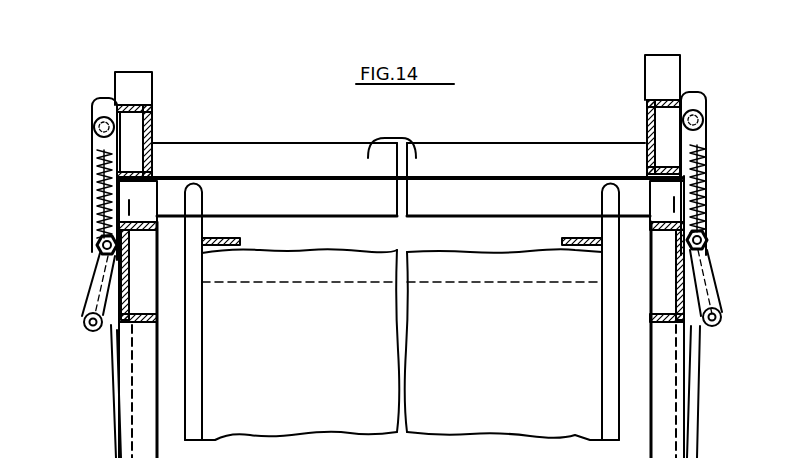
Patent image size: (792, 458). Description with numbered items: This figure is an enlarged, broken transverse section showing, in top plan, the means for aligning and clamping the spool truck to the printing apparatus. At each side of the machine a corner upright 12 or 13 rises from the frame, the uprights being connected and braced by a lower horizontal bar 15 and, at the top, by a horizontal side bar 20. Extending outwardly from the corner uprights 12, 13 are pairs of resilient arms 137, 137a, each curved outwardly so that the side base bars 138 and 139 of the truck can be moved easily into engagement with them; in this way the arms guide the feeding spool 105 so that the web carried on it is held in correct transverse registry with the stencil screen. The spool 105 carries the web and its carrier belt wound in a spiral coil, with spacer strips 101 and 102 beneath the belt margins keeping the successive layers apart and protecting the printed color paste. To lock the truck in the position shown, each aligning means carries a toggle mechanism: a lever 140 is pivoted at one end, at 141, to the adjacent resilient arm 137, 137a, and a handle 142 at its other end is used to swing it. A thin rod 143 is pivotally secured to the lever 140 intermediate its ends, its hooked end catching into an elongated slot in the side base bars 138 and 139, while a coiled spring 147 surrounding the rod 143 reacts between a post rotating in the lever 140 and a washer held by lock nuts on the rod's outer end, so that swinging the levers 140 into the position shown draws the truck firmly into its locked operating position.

The corner upright 12 is at (150, 109).
The corner upright 13 is at (662, 100).
The horizontal bar 15 is at (144, 76).
The horizontal side bar 20 is at (378, 141).
The spacer strip 101 is at (240, 242).
The spacer strip 102 is at (562, 243).
The spool 105 is at (196, 319).
The resilient arm 137 is at (657, 183).
The resilient arm 137a is at (150, 200).
The side base bar 138 is at (155, 238).
The side base bar 139 is at (660, 237).
The lever 140 is at (98, 202).
The pivot 141 is at (84, 322).
The handle 142 is at (94, 127).
The rod 143 is at (112, 417).
The coiled spring 147 is at (98, 187).